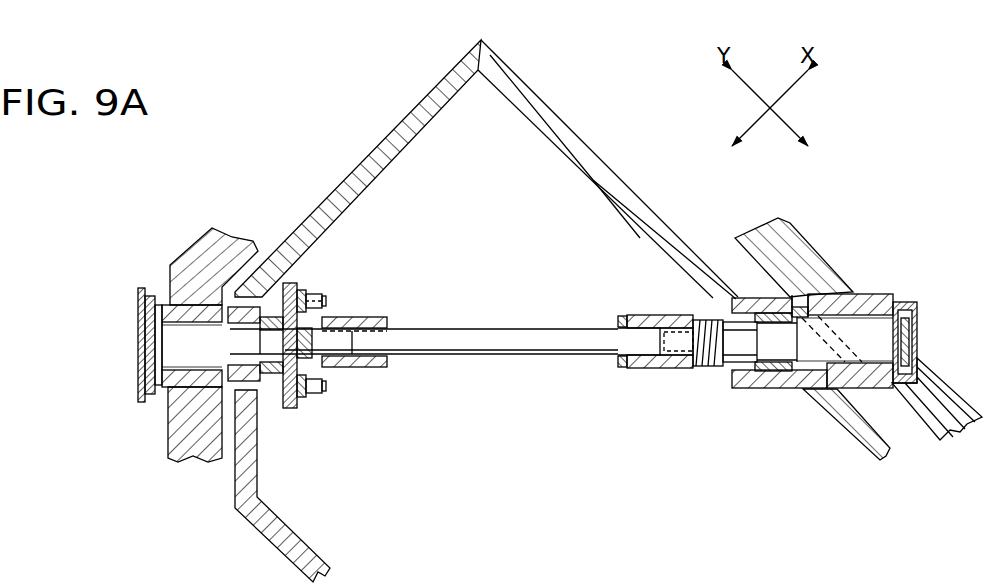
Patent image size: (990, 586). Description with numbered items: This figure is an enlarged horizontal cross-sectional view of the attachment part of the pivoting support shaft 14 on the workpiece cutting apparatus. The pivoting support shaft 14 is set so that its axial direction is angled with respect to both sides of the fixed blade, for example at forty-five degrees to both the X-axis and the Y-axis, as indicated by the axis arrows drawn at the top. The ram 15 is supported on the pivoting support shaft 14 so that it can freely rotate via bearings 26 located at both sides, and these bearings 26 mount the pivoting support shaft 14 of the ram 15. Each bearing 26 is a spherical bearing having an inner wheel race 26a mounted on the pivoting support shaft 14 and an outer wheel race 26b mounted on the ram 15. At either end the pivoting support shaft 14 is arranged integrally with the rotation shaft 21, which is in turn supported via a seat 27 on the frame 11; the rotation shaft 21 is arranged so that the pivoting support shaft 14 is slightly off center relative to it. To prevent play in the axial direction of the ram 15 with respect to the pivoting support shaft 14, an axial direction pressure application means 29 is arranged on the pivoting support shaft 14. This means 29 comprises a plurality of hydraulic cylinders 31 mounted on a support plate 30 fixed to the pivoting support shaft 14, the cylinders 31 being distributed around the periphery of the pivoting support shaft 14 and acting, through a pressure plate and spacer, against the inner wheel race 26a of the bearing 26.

The frame 11 is at (202, 240).
The pivoting support shaft 14 is at (467, 338).
The ram 15 is at (347, 175).
The rotation shaft 21 is at (197, 362).
The bearings 26 is at (263, 376).
The inner wheel race 26a is at (266, 316).
The outer wheel race 26b is at (257, 308).
The seat 27 is at (182, 292).
The axial direction pressure application means 29 is at (424, 382).
The support plate 30 is at (300, 410).
The hydraulic cylinders 31 is at (330, 303).